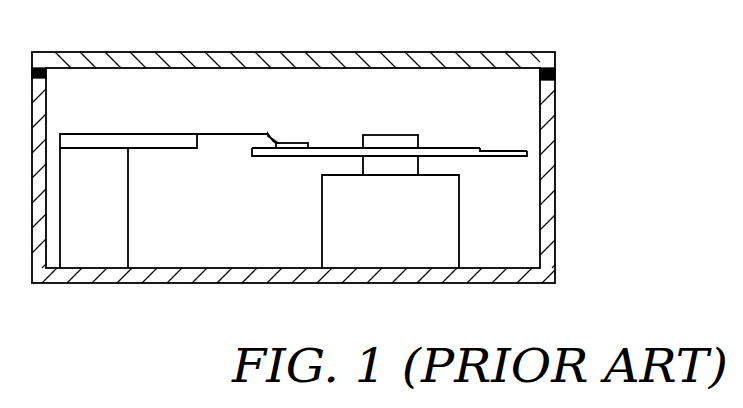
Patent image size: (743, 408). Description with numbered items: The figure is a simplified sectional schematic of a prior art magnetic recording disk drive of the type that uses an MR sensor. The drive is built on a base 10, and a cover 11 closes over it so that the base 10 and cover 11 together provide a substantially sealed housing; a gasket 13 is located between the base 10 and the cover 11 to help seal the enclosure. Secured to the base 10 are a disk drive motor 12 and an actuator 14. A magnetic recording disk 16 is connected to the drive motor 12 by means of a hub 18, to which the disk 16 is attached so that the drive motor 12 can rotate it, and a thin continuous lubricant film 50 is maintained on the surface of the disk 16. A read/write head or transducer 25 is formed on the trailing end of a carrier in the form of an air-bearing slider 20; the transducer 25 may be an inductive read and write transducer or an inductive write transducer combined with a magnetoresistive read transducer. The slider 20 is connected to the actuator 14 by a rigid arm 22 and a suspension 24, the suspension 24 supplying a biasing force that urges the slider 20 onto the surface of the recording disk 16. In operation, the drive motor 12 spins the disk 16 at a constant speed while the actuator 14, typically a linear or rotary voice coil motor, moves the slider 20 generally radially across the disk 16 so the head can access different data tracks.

The base 10 is at (325, 151).
The cover 11 is at (54, 62).
The disk drive motor 12 is at (403, 262).
The gasket 13 is at (557, 70).
The actuator 14 is at (100, 266).
The magnetic recording disk 16 is at (540, 150).
The hub 18 is at (387, 135).
The air-bearing slider 20 is at (302, 143).
The rigid arm 22 is at (128, 134).
The suspension 24 is at (228, 134).
The read/write head or transducer 25 is at (268, 136).
The lubricant film 50 is at (493, 148).